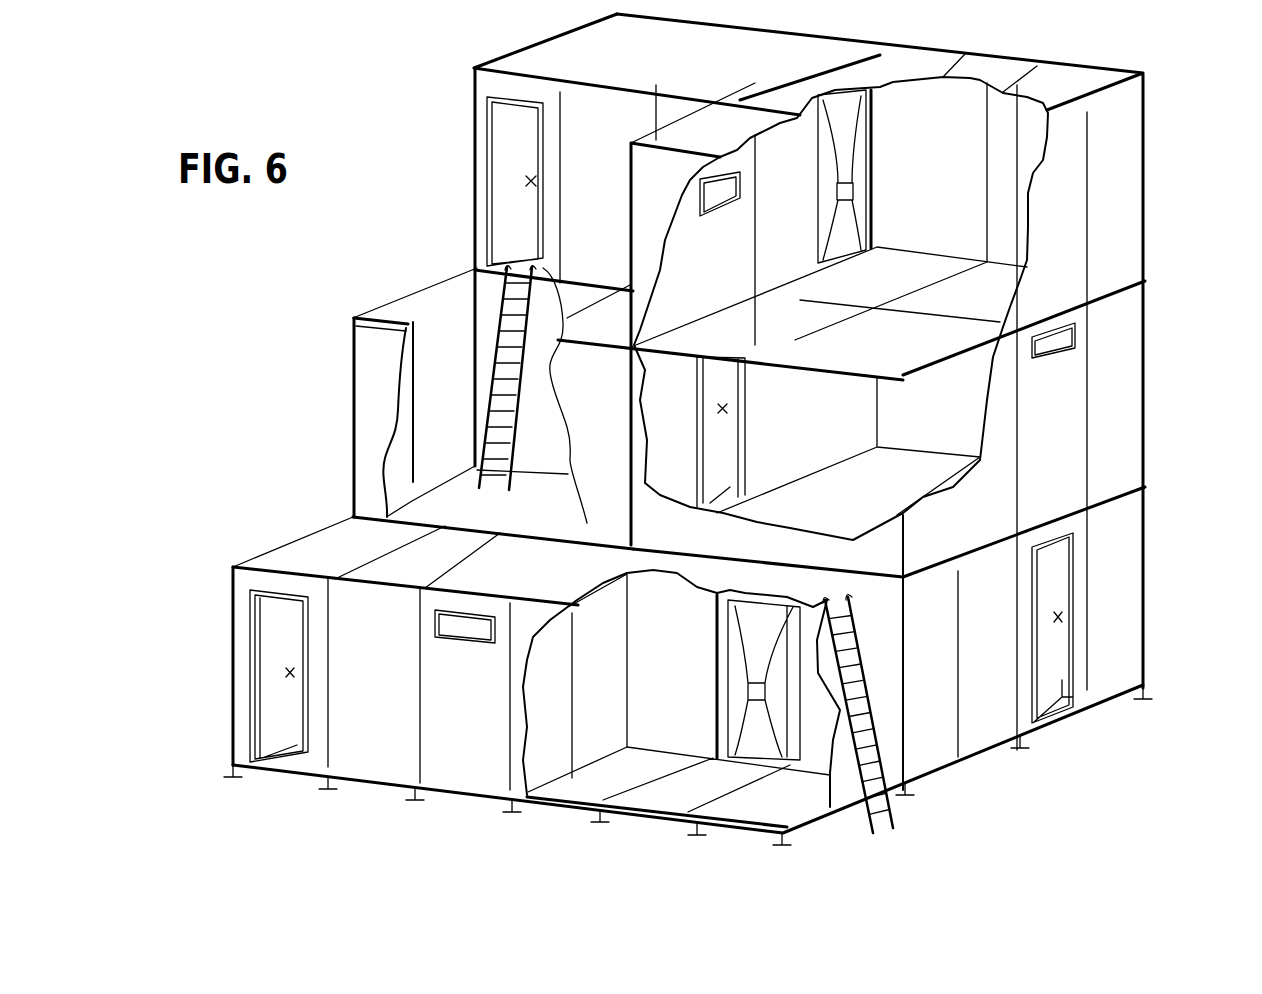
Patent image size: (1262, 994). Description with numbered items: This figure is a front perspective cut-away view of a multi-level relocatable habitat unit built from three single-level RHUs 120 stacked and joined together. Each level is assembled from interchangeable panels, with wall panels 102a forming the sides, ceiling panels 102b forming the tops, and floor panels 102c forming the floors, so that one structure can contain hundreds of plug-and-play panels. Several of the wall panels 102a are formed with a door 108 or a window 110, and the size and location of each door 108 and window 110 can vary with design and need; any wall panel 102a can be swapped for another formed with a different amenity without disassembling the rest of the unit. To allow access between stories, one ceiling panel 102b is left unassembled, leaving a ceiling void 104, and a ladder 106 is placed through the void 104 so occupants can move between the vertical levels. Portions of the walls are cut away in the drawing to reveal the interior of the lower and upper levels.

The wall panel 102a is at (1130, 578).
The ceiling panel 102b is at (580, 46).
The floor panel 102c is at (780, 807).
The ceiling void 104 is at (450, 308).
The ladder 106 is at (503, 272).
The door 108 is at (268, 718).
The window 110 is at (1057, 338).
The single-level RHU 120 is at (474, 112).